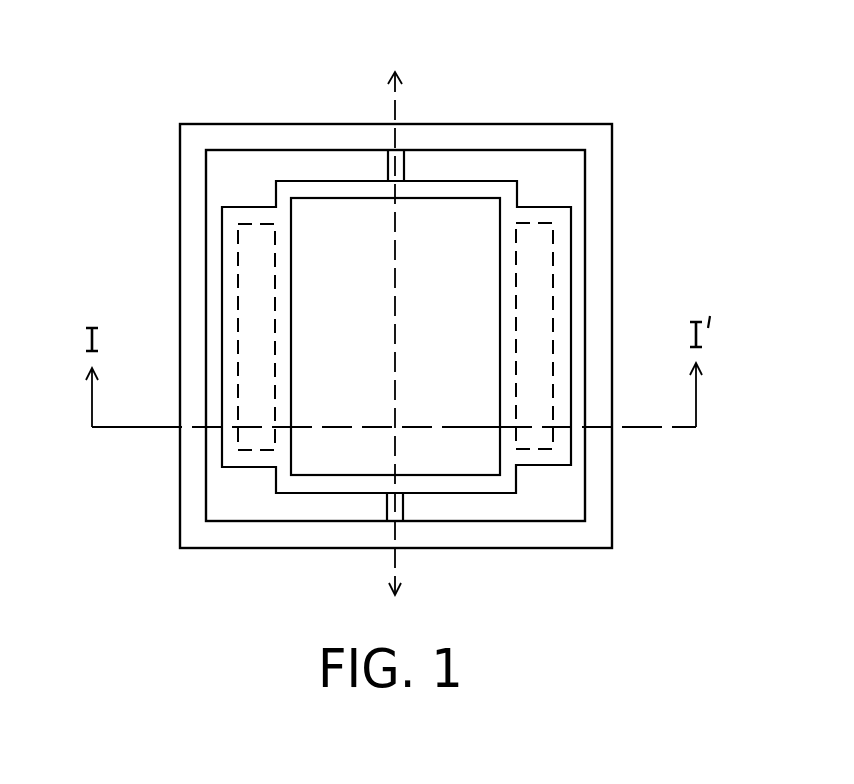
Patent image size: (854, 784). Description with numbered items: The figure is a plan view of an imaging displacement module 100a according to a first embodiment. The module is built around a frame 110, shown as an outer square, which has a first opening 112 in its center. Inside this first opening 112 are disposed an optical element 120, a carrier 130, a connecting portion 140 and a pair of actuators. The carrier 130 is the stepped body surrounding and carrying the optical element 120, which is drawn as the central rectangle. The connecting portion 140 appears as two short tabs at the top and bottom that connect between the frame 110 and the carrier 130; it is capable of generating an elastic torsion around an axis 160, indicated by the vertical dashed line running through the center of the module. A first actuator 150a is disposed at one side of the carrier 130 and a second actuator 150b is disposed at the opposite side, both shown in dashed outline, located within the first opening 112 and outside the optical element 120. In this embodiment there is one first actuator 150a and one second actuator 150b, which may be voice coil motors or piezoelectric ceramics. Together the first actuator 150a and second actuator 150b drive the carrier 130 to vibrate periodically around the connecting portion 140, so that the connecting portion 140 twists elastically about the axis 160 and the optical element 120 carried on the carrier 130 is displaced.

The imaging displacement module 100a is at (730, 598).
The frame 110 is at (614, 148).
The first opening 112 is at (242, 187).
The optical element 120 is at (432, 232).
The carrier 130 is at (518, 190).
The connecting portion 140 is at (387, 165).
The first actuator 150a is at (532, 303).
The second actuator 150b is at (258, 303).
The axis 160 is at (398, 99).